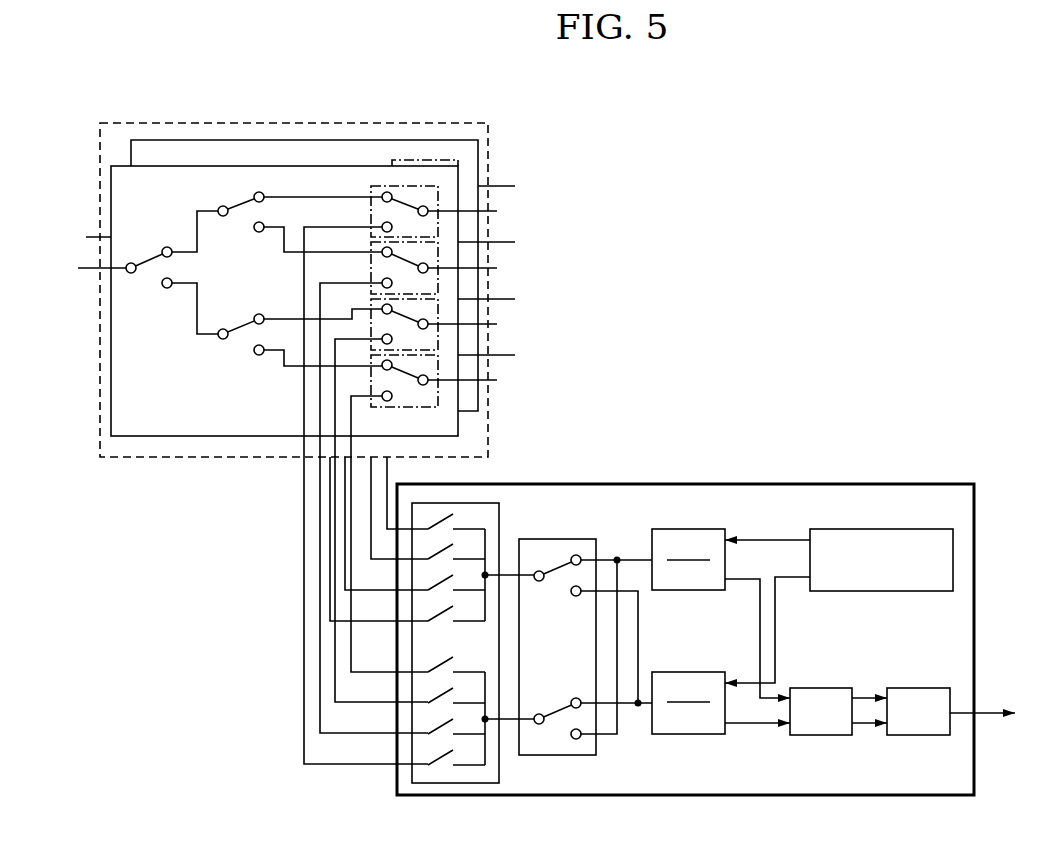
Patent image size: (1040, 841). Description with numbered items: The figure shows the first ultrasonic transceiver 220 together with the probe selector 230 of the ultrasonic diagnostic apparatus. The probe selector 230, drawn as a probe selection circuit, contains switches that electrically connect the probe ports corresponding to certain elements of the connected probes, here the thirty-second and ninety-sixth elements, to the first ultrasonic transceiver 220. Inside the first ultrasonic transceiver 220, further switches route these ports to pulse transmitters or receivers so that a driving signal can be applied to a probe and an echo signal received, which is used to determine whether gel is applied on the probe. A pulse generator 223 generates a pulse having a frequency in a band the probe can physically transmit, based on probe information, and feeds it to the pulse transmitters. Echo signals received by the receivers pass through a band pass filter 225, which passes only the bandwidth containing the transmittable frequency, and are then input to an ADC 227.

The probe selector 230 is at (343, 123).
The first ultrasonic transceiver 220 is at (767, 484).
The pulse generator 223 is at (915, 529).
The band pass filter 225 is at (818, 688).
The ADC 227 is at (922, 688).